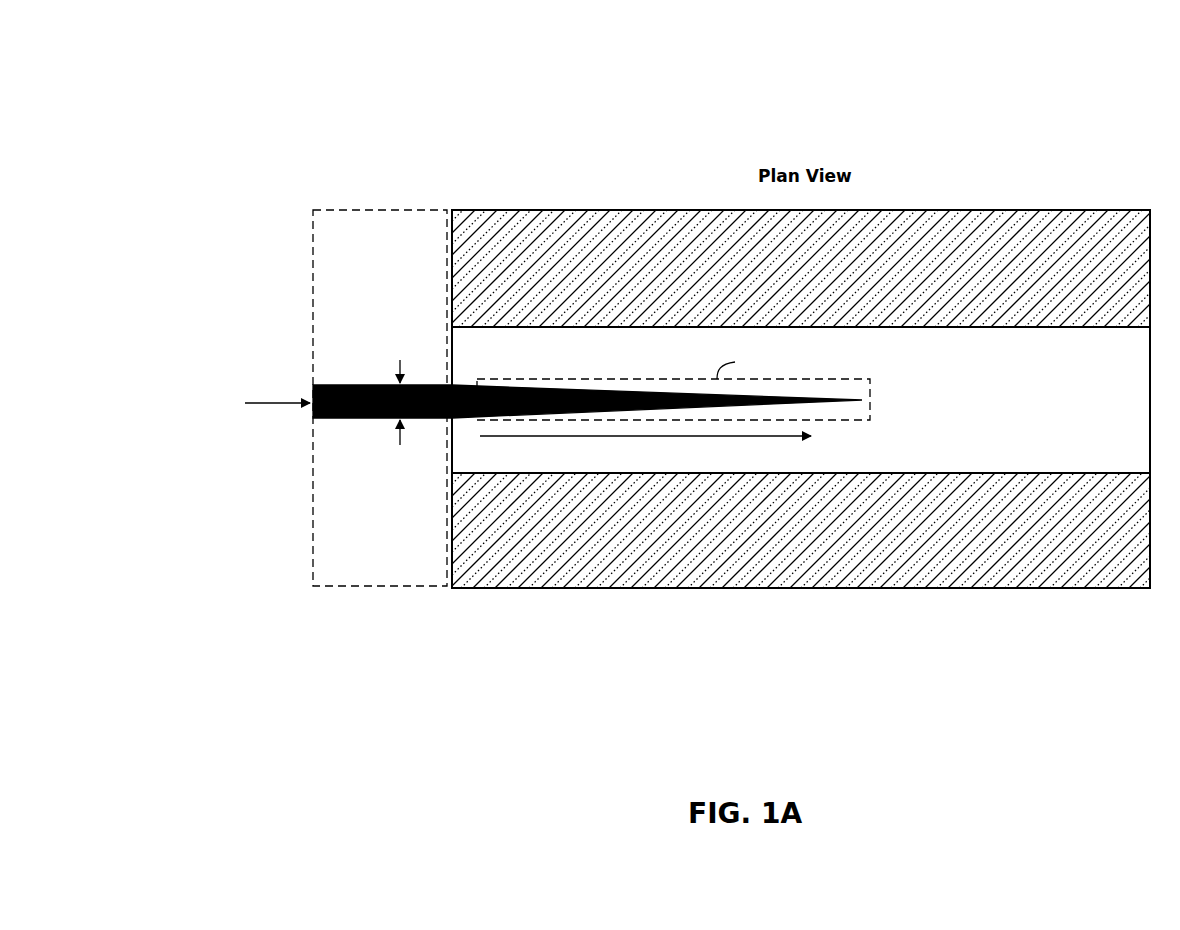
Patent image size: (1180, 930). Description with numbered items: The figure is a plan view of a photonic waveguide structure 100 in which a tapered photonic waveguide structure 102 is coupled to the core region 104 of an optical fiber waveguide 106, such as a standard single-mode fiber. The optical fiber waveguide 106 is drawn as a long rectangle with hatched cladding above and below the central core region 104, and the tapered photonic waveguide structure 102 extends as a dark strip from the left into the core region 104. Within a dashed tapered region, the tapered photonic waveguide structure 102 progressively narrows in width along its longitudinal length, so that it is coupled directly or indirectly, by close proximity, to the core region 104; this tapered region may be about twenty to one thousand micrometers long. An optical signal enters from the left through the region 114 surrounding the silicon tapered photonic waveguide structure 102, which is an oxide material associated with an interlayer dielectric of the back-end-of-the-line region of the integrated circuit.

The photonic waveguide structure 100 is at (236, 76).
The tapered photonic waveguide structure 102 is at (343, 385).
The core region 104 is at (952, 408).
The optical fiber waveguide 106 is at (620, 208).
The region surrounding the tapered photonic waveguide structure 114 is at (387, 210).